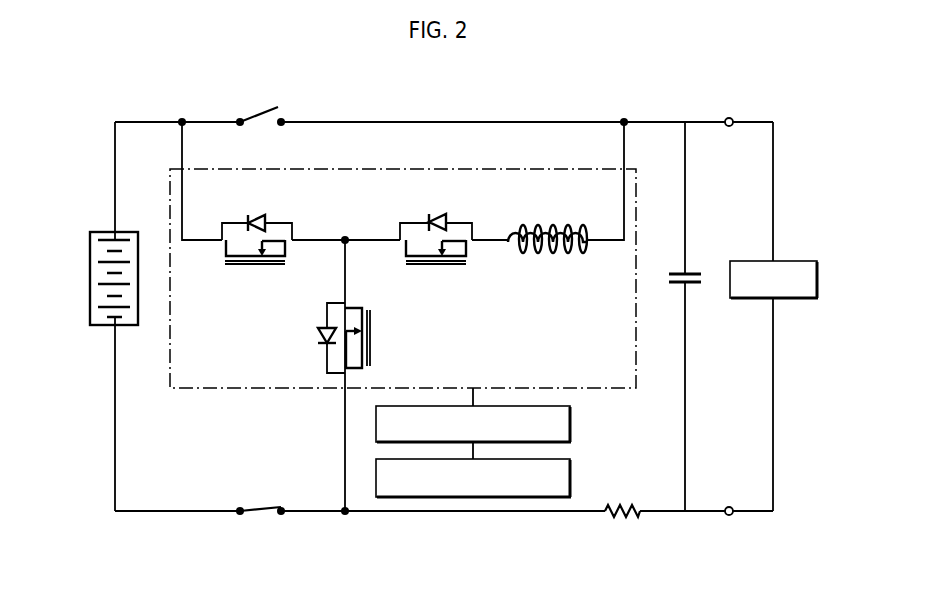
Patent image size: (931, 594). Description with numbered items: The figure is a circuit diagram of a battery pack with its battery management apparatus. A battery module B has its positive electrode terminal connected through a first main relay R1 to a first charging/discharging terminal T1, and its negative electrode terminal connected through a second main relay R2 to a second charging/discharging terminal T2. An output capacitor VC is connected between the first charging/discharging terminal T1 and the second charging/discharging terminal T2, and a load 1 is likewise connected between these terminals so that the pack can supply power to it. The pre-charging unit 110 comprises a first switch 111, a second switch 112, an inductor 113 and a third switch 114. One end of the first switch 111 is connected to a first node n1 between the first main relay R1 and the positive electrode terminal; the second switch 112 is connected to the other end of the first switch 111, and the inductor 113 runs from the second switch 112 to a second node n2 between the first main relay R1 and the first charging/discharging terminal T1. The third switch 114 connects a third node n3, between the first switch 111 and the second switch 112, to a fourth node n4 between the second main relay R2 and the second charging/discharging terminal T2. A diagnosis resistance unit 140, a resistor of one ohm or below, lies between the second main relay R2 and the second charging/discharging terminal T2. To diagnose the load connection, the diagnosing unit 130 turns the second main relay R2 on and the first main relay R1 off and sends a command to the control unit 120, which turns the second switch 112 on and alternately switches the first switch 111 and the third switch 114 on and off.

The load 1 is at (801, 260).
The pre-charging unit 110 is at (539, 169).
The first switch 111 is at (275, 223).
The second switch 112 is at (456, 223).
The inductor 113 is at (563, 225).
The third switch 114 is at (327, 317).
The control unit 120 is at (571, 423).
The diagnosing unit 130 is at (571, 478).
The diagnosis resistance unit 140 is at (611, 518).
The battery module B is at (90, 254).
The output capacitor VC is at (695, 274).
The first main relay R1 is at (264, 110).
The second main relay R2 is at (266, 507).
The first charging/discharging terminal T1 is at (727, 110).
The second charging/discharging terminal T2 is at (728, 498).
The first node n1 is at (180, 108).
The second node n2 is at (623, 108).
The third node n3 is at (344, 226).
The fourth node n4 is at (344, 531).